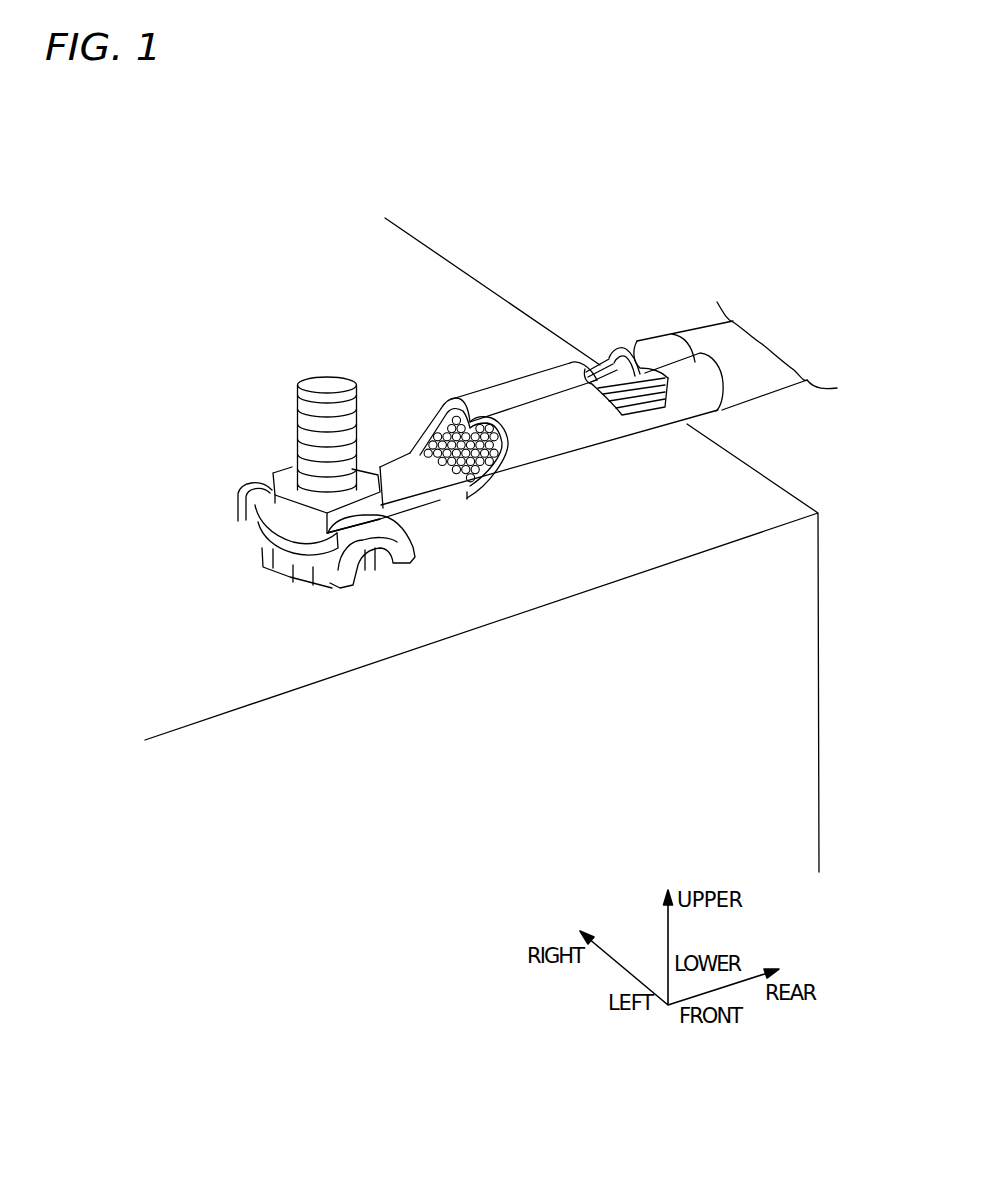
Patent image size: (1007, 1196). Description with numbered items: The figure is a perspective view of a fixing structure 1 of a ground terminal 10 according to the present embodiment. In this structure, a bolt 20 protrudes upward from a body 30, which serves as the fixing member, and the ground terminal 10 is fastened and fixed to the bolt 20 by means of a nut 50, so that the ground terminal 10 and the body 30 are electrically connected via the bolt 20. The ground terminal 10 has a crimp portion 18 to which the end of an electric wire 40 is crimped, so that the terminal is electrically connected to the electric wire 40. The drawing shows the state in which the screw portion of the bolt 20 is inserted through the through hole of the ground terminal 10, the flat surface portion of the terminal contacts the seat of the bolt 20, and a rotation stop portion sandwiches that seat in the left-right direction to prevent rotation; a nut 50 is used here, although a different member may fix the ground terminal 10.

The fixing structure 1 is at (385, 376).
The ground terminal 10 is at (545, 481).
The crimp portion 18 is at (545, 410).
The bolt 20 is at (302, 379).
The body 30 is at (209, 598).
The electric wire 40 is at (751, 404).
The nut 50 is at (284, 468).